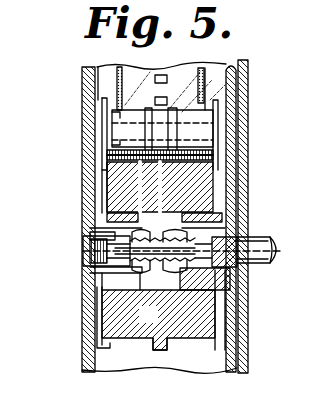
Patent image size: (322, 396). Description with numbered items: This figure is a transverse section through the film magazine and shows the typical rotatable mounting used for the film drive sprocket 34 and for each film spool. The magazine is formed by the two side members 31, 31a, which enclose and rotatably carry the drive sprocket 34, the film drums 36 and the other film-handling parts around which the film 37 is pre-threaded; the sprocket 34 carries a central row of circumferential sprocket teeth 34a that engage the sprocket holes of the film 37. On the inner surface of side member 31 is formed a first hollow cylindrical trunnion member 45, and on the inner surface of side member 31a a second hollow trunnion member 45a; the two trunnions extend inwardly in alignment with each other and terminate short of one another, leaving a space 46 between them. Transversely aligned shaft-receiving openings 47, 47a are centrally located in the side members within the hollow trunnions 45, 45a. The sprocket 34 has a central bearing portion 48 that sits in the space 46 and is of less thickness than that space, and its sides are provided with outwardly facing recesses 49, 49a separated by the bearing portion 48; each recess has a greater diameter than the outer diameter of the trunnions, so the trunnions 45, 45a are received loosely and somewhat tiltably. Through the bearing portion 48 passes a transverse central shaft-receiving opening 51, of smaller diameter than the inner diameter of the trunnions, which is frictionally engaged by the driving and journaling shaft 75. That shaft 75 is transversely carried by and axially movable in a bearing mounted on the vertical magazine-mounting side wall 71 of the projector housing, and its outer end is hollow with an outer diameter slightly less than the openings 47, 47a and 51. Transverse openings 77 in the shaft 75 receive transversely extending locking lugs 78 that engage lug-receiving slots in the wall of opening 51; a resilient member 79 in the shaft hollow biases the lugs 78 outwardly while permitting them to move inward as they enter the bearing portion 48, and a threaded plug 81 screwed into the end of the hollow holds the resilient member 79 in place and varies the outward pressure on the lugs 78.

The side member 31 is at (231, 68).
The side member 31a is at (87, 67).
The film drive sprocket 34 is at (207, 318).
The sprocket teeth 34a is at (157, 350).
The film drum 36 is at (208, 120).
The film 37 is at (117, 88).
The first hollow cylindrical trunnion member 45 is at (217, 224).
The second hollow trunnion member 45a is at (107, 223).
The space 46 is at (130, 300).
The shaft-receiving opening 47 is at (232, 233).
The shaft-receiving opening 47a is at (90, 232).
The central bearing portion 48 is at (205, 297).
The recess 49 is at (213, 197).
The recess 49a is at (123, 212).
The shaft-receiving opening 51 is at (107, 283).
The magazine-mounting side wall 71 is at (243, 75).
The shaft 75 is at (262, 242).
The transverse opening 77 is at (150, 315).
The locking lug 78 is at (148, 234).
The resilient member 79 is at (163, 234).
The threaded plug 81 is at (92, 251).